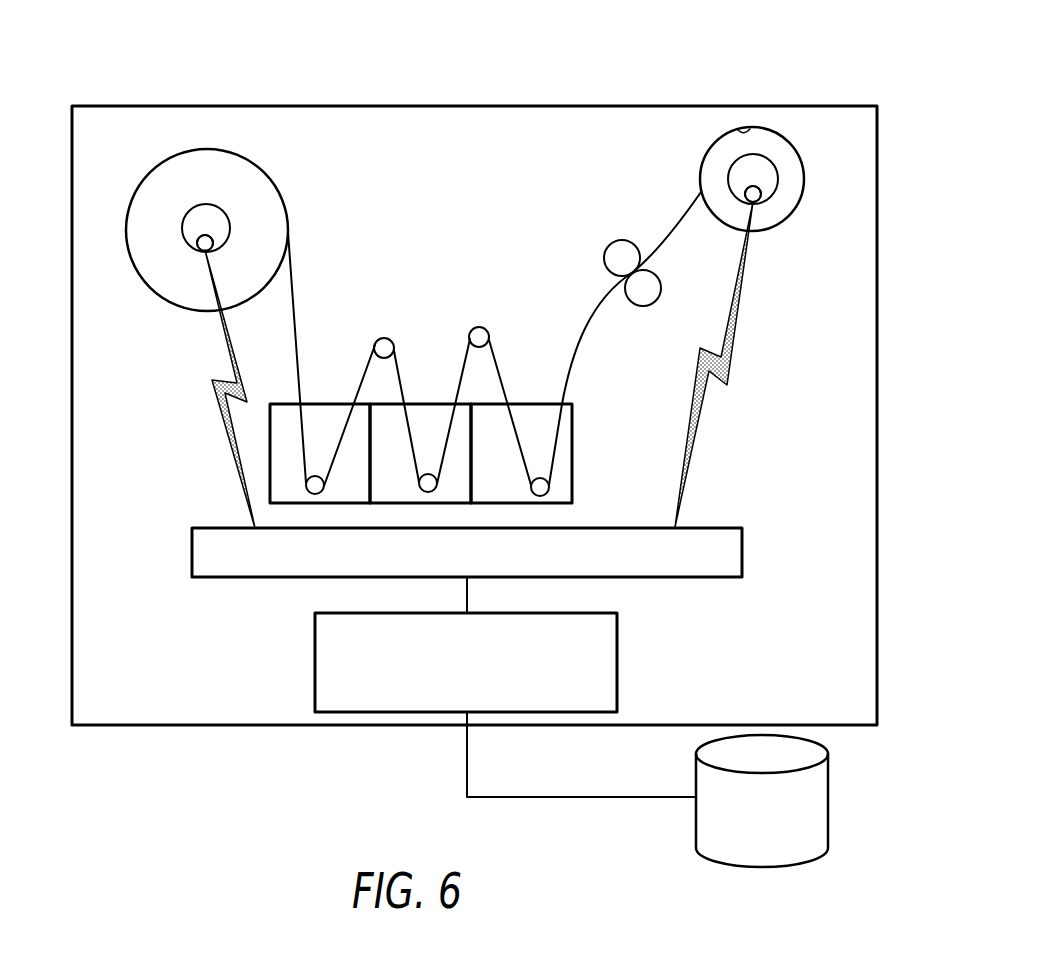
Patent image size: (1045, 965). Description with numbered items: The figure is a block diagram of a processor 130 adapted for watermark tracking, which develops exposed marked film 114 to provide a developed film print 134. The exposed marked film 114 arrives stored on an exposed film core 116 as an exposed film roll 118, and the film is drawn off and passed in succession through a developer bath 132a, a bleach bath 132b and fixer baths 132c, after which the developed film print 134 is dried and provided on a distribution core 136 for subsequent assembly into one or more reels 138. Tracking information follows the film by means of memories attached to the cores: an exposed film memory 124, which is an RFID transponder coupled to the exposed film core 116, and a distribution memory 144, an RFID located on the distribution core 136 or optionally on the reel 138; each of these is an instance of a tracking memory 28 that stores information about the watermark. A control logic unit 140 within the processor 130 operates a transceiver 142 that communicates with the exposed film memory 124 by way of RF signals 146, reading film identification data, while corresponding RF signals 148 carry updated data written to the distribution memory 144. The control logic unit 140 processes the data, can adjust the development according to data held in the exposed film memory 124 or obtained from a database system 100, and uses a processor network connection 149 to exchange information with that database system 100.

The processor 130 is at (425, 86).
The exposed film roll 118 is at (222, 150).
The exposed film core 116 is at (228, 218).
The exposed film memory 124 is at (201, 251).
The tracking memory 28 is at (197, 238).
The exposed marked film 114 is at (292, 293).
The developed film print 134 is at (592, 313).
The developer bath 132a is at (317, 404).
The bleach bath 132b is at (423, 404).
The fixer baths 132c is at (582, 438).
The reel 138 is at (742, 128).
The distribution core 136 is at (777, 167).
The distribution memory 144 is at (762, 198).
The RF signals 146 is at (218, 398).
The RF signal from take-up reel tag 148 is at (732, 362).
The transceiver 142 is at (657, 578).
The control logic unit 140 is at (617, 655).
The processor network connection 149 is at (467, 778).
The database system 100 is at (828, 787).